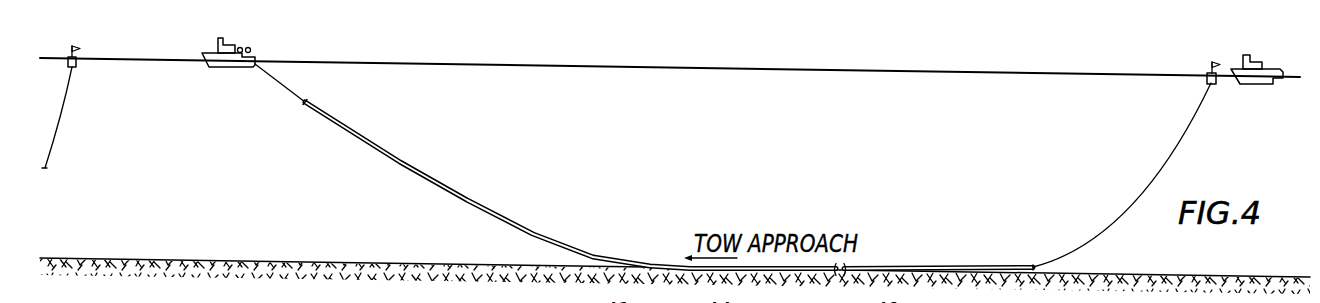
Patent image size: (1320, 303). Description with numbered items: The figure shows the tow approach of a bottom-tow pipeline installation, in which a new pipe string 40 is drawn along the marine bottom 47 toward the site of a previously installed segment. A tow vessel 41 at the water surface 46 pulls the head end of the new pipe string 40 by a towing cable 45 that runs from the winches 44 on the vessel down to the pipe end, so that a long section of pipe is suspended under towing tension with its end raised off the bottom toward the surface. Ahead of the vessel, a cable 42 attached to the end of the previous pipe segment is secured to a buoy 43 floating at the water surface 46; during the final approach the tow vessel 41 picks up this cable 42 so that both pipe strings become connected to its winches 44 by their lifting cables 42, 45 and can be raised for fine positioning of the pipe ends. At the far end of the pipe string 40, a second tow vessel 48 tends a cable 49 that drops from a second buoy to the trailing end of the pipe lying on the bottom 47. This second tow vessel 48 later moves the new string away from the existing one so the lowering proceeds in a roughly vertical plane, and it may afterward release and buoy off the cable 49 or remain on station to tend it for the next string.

The new pipe string 40 is at (372, 142).
The tow vessel 41 is at (210, 67).
The cable 42 is at (63, 112).
The buoy 43 is at (77, 55).
The winches 44 is at (252, 48).
The towing cable 45 is at (284, 87).
The water surface 46 is at (725, 67).
The marine bottom 47 is at (310, 261).
The second tow vessel 48 is at (1260, 85).
The cable 49 is at (1138, 197).